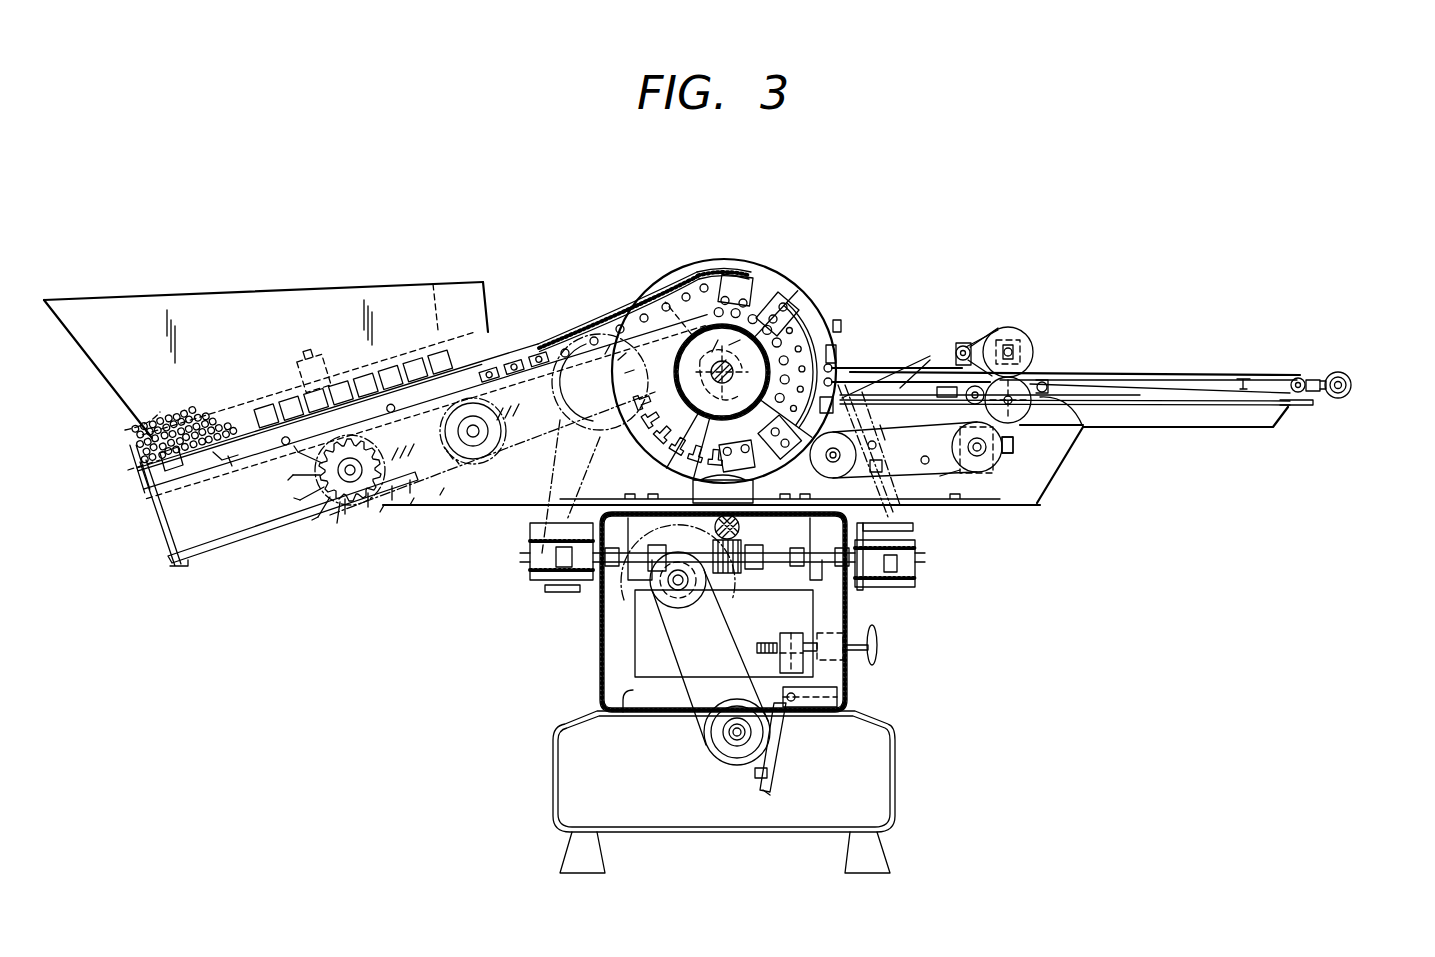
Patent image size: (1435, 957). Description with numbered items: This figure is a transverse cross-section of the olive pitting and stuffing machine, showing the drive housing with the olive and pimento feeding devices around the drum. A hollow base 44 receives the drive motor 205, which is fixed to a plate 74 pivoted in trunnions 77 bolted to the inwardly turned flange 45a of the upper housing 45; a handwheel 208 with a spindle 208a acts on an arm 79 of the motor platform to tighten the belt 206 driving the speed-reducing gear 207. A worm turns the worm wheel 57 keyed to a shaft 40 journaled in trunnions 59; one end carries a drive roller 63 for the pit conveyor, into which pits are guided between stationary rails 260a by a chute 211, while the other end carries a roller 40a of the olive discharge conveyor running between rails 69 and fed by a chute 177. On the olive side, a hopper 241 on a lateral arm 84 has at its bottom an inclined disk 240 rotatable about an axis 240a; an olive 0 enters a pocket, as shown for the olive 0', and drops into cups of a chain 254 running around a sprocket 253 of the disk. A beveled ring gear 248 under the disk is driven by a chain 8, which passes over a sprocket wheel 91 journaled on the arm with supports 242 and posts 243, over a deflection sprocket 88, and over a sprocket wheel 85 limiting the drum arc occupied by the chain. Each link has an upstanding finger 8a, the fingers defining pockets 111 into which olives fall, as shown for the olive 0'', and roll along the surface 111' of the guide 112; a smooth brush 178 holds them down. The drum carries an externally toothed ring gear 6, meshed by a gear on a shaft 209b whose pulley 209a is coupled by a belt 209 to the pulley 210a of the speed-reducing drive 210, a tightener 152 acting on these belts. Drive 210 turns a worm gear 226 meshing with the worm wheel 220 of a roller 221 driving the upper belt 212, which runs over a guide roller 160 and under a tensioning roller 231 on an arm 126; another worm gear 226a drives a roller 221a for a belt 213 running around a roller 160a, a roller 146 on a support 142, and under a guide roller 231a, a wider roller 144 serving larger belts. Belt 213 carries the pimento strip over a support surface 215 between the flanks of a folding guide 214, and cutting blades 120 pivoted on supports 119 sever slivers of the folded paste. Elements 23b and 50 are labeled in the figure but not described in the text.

The externally toothed ring gear 6 is at (732, 262).
The chain 8 is at (645, 310).
The upstanding finger 8a is at (388, 432).
The olive 0 is at (119, 432).
The olive 0' is at (110, 463).
The olive 0'' is at (408, 348).
The frame housing 23b is at (1075, 400).
The shaft 40 is at (822, 562).
The roller 40a is at (583, 566).
The hollow base 44 is at (827, 833).
The upper housing 45 is at (600, 681).
The inwardly turned flange 45a is at (627, 700).
The drum pockets 50 is at (717, 280).
The worm wheel 57 is at (777, 604).
The trunnions 59 is at (812, 563).
The drive roller 63 is at (903, 567).
The rails 69 is at (532, 523).
The plate 74 is at (768, 793).
The trunnions 77 is at (780, 705).
The arm 79 is at (800, 662).
The lateral arm 84 is at (483, 498).
The sprocket wheel 85 is at (590, 398).
The deflection sprocket 88 is at (485, 451).
The sprocket wheel 91 is at (306, 462).
The pockets 111 is at (412, 444).
The surface 111' is at (516, 405).
The support 112 is at (512, 345).
The supports 119 is at (836, 326).
The cutting blade 120 is at (828, 344).
The arm 126 is at (1180, 416).
The support 142 is at (1316, 382).
The wider roller 144 is at (1347, 374).
The roller 146 is at (1293, 382).
The belt tightening arrangement 152 is at (985, 462).
The guide roller 160 is at (838, 366).
The roller 160a is at (932, 358).
The chute 177 is at (533, 556).
The smooth brush 178 is at (680, 272).
The drive motor 205 is at (731, 766).
The belt 206 is at (708, 700).
The speed-reducing gear 207 is at (645, 603).
The handwheel 208 is at (880, 641).
The spindle 208a is at (762, 641).
The belt 209 is at (962, 470).
The pulley 209a is at (752, 492).
The shaft 209b is at (898, 512).
The speed-reducing drive 210 is at (1004, 446).
The pulley 210a is at (1018, 497).
The chute 211 is at (834, 340).
The upper belt 212 is at (942, 350).
The belt 213 is at (1158, 374).
The folding guide 214 is at (1043, 381).
The support surface 215 is at (1190, 380).
The worm wheel 220 is at (1010, 346).
The roller 221 is at (1023, 368).
The drive roller 221a is at (1015, 440).
The worm gear 226 is at (1000, 345).
The worm gear 226a is at (996, 401).
The tensioning and deflecting roller 231 is at (968, 343).
The guide roller 231a is at (968, 403).
The disk 240 is at (270, 407).
The axis 240a is at (292, 293).
The hopper 241 is at (455, 292).
The supports 242 is at (240, 538).
The posts 243 is at (166, 535).
The beveled ring gear 248 is at (230, 461).
The sprocket 253 is at (195, 462).
The chain 254 is at (434, 300).
The stationary rails 260a is at (865, 529).